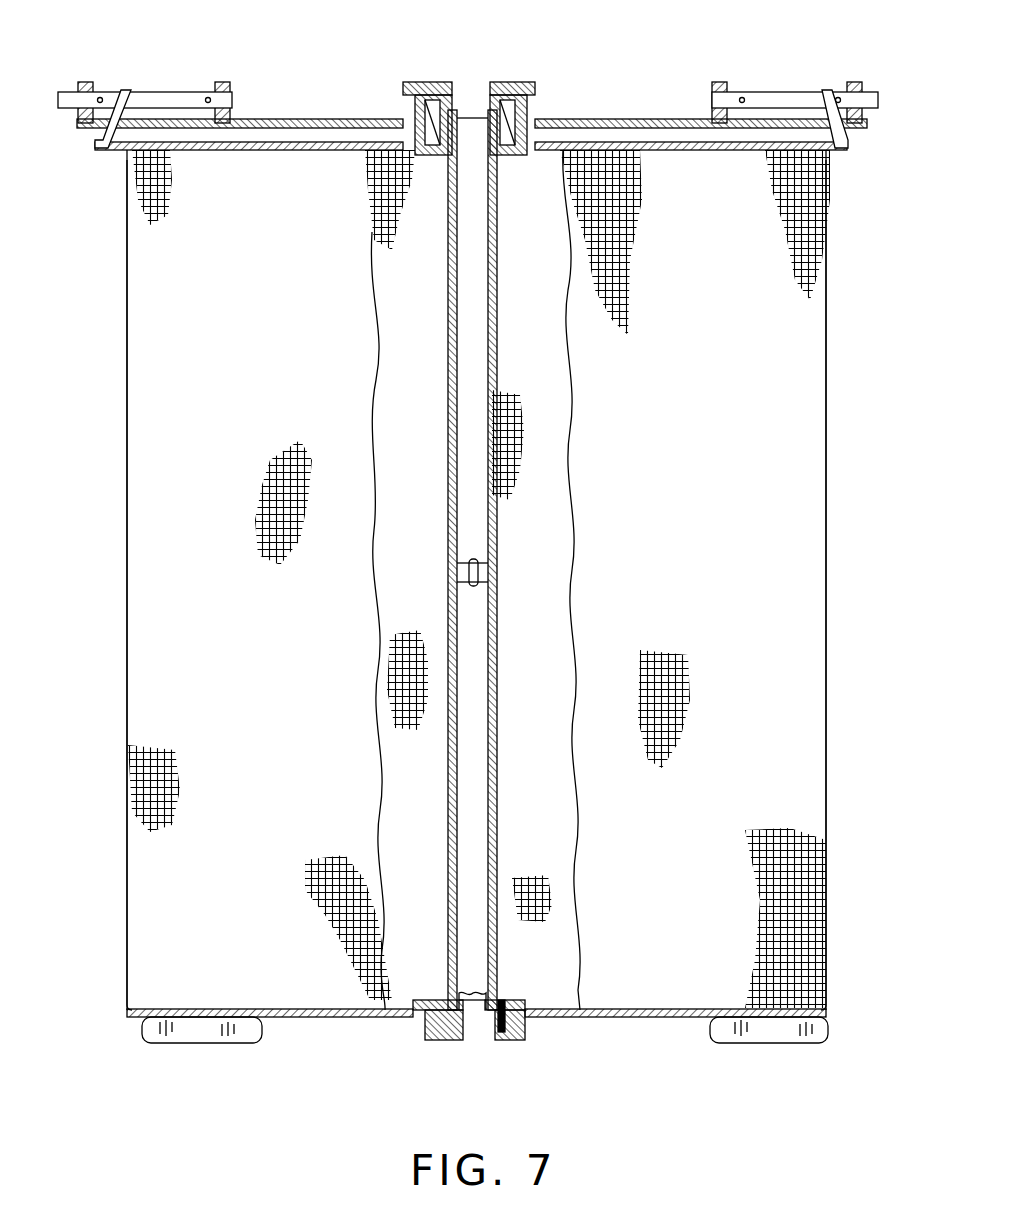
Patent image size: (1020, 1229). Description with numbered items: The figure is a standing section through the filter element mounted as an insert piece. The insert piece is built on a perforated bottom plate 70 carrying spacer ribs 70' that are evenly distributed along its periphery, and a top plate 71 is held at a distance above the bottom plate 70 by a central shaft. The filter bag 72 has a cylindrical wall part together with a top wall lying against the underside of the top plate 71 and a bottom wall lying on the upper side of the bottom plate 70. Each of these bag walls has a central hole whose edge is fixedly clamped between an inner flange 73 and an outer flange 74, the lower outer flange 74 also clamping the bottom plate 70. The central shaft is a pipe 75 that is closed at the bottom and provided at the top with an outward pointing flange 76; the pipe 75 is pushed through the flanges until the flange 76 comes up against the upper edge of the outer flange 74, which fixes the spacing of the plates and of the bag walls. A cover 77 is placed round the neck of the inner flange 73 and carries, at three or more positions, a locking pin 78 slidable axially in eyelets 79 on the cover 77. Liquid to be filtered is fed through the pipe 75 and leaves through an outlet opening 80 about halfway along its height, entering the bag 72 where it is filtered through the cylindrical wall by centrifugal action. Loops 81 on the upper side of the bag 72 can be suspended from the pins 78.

The perforated bottom plate 70 is at (476, 1038).
The spacer ribs 70' is at (485, 1056).
The top plate 71 is at (645, 120).
The filter bag 72 is at (760, 516).
The inner flange 73 is at (505, 158).
The outer flange 74 is at (540, 100).
The pipe 75 is at (497, 288).
The outward pointing flange 76 is at (493, 82).
The cover 77 is at (310, 118).
The locking pin 78 is at (160, 95).
The eyelets 79 is at (86, 82).
The outlet opening 80 is at (497, 570).
The loops 81 is at (95, 150).